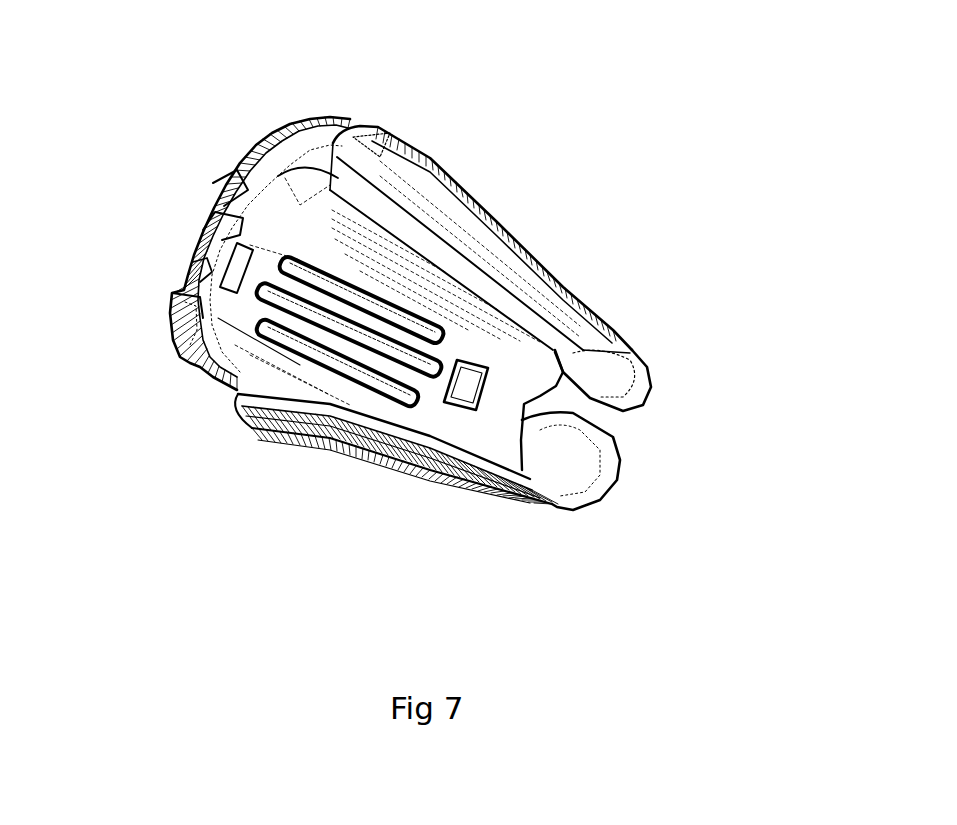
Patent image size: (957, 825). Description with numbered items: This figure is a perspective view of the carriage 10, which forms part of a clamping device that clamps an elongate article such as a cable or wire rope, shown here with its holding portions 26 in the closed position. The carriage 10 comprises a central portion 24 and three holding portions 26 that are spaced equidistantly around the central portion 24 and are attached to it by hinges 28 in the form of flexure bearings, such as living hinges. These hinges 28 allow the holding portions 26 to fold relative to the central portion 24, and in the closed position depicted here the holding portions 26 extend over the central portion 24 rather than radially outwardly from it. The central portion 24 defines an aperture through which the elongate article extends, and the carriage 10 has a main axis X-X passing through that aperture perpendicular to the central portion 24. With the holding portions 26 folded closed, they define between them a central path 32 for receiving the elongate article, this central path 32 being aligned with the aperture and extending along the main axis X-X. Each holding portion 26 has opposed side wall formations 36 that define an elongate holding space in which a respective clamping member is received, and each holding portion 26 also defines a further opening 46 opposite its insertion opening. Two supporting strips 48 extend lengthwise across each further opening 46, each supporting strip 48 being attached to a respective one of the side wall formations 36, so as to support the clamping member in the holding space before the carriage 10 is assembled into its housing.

The carriage 10 is at (517, 175).
The central portion 24 is at (168, 300).
The holding portions 26 is at (643, 357).
The hinges 28 is at (217, 227).
The central path 32 is at (587, 402).
The side wall formations 36 is at (288, 227).
The further opening 46 is at (365, 380).
The supporting strips 48 is at (362, 318).
The main axis X is at (222, 175).